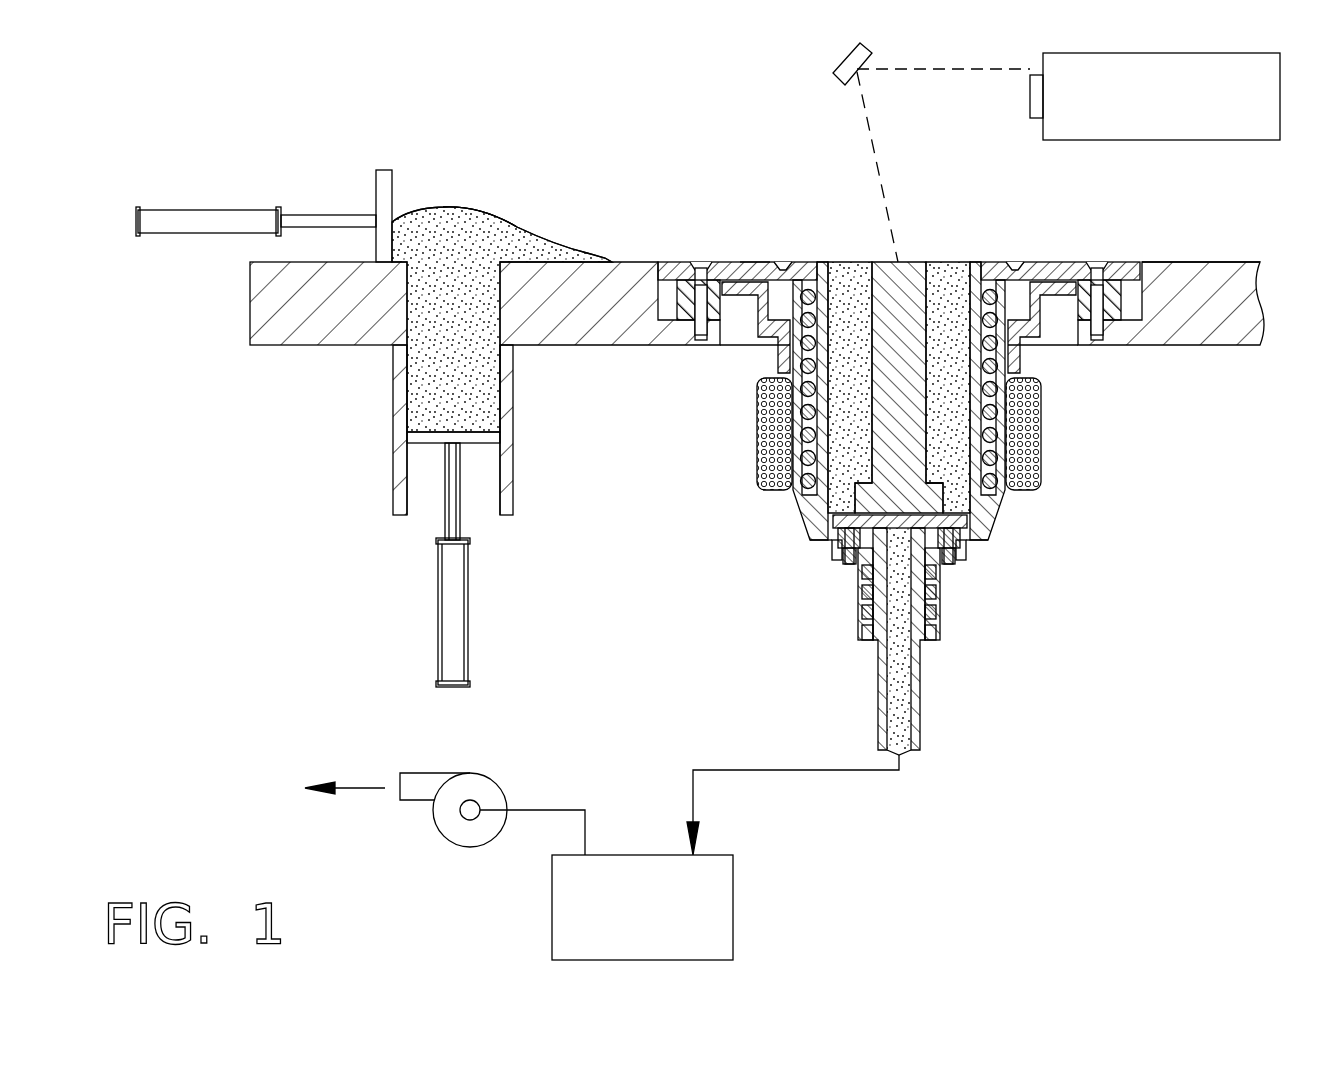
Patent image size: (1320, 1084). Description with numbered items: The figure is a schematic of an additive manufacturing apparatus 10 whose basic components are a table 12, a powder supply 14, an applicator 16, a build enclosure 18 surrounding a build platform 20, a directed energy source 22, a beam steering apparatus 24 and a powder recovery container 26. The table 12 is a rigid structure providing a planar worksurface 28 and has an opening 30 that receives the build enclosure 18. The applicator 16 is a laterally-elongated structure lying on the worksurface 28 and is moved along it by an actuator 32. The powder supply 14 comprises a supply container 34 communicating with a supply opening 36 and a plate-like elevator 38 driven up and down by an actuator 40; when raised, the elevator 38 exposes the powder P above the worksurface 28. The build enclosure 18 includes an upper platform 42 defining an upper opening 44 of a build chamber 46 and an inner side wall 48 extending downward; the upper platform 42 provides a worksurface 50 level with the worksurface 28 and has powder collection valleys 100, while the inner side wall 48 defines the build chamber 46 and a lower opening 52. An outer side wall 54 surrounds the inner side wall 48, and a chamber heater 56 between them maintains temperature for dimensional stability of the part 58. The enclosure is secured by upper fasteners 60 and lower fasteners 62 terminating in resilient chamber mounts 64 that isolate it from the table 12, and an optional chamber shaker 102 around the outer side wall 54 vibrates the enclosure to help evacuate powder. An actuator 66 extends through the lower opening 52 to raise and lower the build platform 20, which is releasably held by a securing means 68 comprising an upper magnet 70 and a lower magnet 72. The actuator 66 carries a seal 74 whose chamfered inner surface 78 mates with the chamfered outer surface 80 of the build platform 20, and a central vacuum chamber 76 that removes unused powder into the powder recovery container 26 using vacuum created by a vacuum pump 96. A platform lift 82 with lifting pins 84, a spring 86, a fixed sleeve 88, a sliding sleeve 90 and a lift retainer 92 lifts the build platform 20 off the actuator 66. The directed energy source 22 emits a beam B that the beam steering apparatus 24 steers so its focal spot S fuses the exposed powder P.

The additive manufacturing apparatus 10 is at (240, 136).
The table 12 is at (257, 312).
The powder supply 14 is at (461, 430).
The applicator 16 is at (382, 183).
The build enclosure 18 is at (1087, 232).
The build platform 20 is at (968, 522).
The directed energy source 22 is at (1162, 97).
The beam steering apparatus 24 is at (836, 76).
The powder recovery container 26 is at (657, 920).
The worksurface 28 is at (1240, 262).
The opening 30 is at (1232, 225).
The actuator 32 is at (197, 212).
The supply container 34 is at (505, 482).
The supply opening 36 is at (410, 268).
The elevator 38 is at (485, 436).
The actuator 40 is at (416, 526).
The upper platform 42 is at (738, 262).
The upper opening 44 is at (838, 262).
The build chamber 46 is at (946, 262).
The inner side wall 48 is at (805, 498).
The worksurface 50 is at (757, 260).
The lower opening 52 is at (988, 552).
The outer side wall 54 is at (795, 387).
The chamber heater 56 is at (800, 455).
The part 58 is at (920, 262).
The upper fasteners 60 is at (693, 262).
The lower fasteners 62 is at (700, 345).
The chamber mounts 64 is at (680, 280).
The actuator 66 is at (921, 708).
The securing means 68 is at (837, 548).
The upper magnet 70 is at (952, 493).
The lower magnet 72 is at (938, 558).
The seal 74 is at (970, 532).
The vacuum chamber 76 is at (905, 668).
The chamfered inner surface 78 is at (832, 535).
The chamfered outer surface 80 is at (832, 520).
The platform lift 82 is at (868, 618).
The lifting pins 84 is at (960, 555).
The spring 86 is at (860, 578).
The fixed sleeve 88 is at (868, 636).
The sliding sleeve 90 is at (866, 594).
The lift retainer 92 is at (850, 612).
The vacuum pump 96 is at (480, 783).
The powder collection valleys 100 is at (783, 262).
The chamber shaker 102 is at (1025, 420).
The powder P is at (526, 232).
The focal spot S is at (898, 262).
The beam B is at (868, 118).